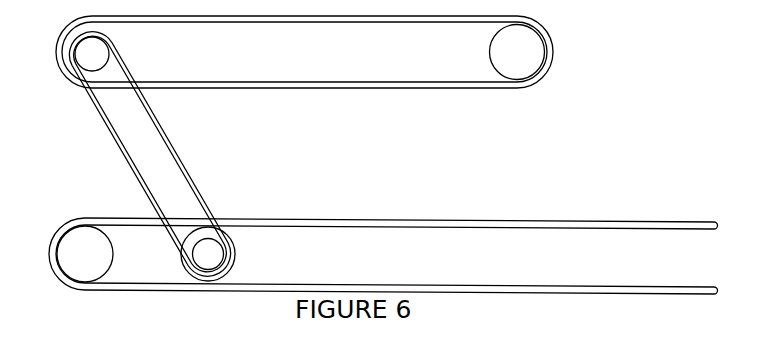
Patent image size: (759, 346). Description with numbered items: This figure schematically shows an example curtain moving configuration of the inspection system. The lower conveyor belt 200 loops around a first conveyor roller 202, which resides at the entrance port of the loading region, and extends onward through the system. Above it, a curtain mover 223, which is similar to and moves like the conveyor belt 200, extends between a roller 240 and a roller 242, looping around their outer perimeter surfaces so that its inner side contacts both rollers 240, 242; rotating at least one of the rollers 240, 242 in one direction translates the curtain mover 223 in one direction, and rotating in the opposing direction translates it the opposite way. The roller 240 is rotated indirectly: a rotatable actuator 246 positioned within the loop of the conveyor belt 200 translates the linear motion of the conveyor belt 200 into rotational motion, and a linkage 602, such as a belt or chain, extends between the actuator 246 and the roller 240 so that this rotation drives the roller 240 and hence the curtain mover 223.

The conveyor belt 200 is at (340, 217).
The first conveyor roller 202 is at (87, 252).
The curtain mover 223 is at (339, 90).
The roller 240 is at (120, 50).
The roller 242 is at (518, 53).
The rotatable actuator 246 is at (237, 257).
The linkage 602 is at (175, 160).